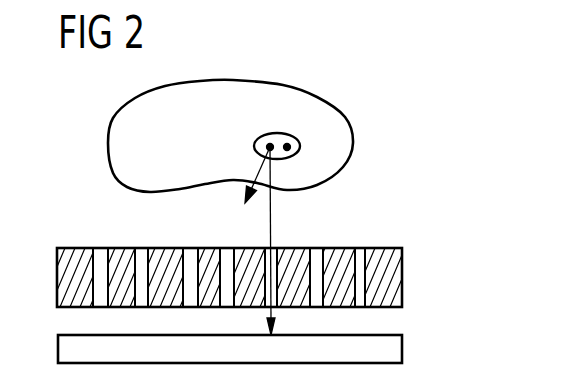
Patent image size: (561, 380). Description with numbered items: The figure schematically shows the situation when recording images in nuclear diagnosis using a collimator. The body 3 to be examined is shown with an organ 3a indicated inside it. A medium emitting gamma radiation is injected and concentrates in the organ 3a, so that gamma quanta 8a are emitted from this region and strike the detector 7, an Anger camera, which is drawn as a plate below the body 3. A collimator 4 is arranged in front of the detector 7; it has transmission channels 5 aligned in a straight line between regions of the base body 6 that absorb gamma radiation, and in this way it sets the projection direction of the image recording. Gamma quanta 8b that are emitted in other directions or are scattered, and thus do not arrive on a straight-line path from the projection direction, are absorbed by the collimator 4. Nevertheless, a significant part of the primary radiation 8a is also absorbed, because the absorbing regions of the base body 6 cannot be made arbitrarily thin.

The body 3 is at (283, 100).
The organ 3a is at (300, 148).
The collimator 4 is at (240, 251).
The transmission channels 5 is at (142, 248).
The base body 6 is at (122, 248).
The detector 7 is at (402, 349).
The gamma quanta 8a is at (271, 225).
The gamma quanta 8b is at (262, 182).